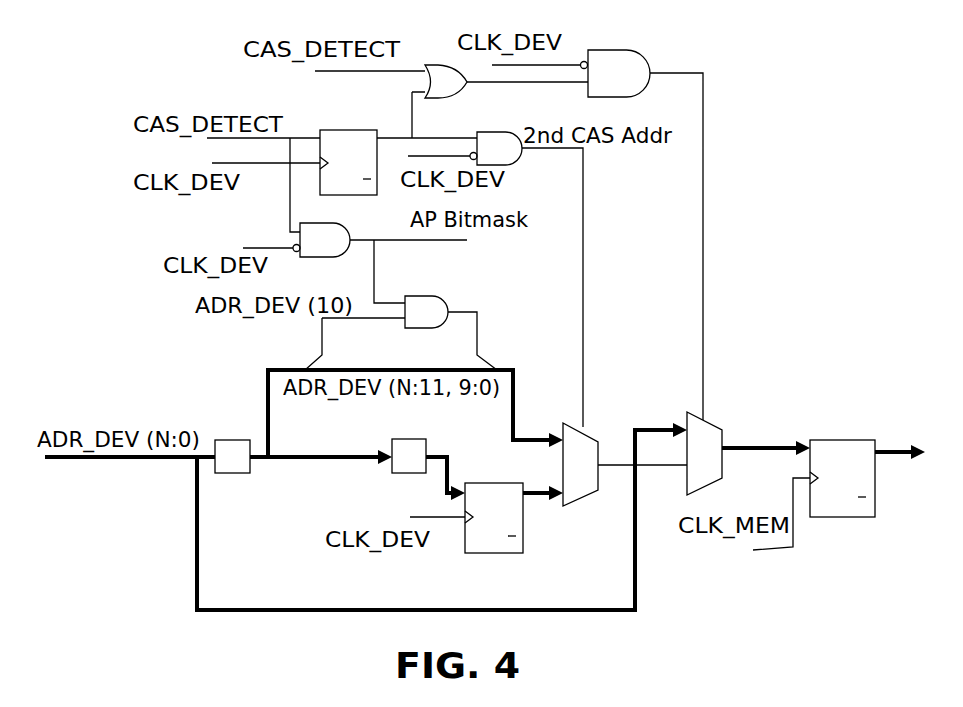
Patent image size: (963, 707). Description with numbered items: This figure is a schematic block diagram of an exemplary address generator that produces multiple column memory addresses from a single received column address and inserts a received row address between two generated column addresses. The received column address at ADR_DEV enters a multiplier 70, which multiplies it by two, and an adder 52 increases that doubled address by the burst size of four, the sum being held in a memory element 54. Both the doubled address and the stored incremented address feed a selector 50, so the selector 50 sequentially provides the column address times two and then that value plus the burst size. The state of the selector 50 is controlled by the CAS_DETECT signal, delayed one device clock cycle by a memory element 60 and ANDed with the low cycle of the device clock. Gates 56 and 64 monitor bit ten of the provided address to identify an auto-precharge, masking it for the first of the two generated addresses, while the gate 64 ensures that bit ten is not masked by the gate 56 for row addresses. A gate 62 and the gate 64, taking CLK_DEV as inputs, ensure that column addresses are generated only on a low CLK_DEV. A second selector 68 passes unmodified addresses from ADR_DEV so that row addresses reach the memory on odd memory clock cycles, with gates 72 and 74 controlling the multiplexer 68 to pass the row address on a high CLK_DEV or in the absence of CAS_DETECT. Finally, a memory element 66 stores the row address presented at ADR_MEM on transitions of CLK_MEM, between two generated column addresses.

The selector 50 is at (596, 438).
The adder 52 is at (426, 442).
The memory element 54 is at (523, 543).
The gate 56 is at (442, 297).
The memory element 60 is at (346, 130).
The gate 62 is at (515, 163).
The gate 64 is at (345, 226).
The memory element 66 is at (875, 500).
The selector 68 is at (720, 428).
The multiplier 70 is at (250, 472).
The gate 72 is at (645, 52).
The gate 74 is at (462, 95).